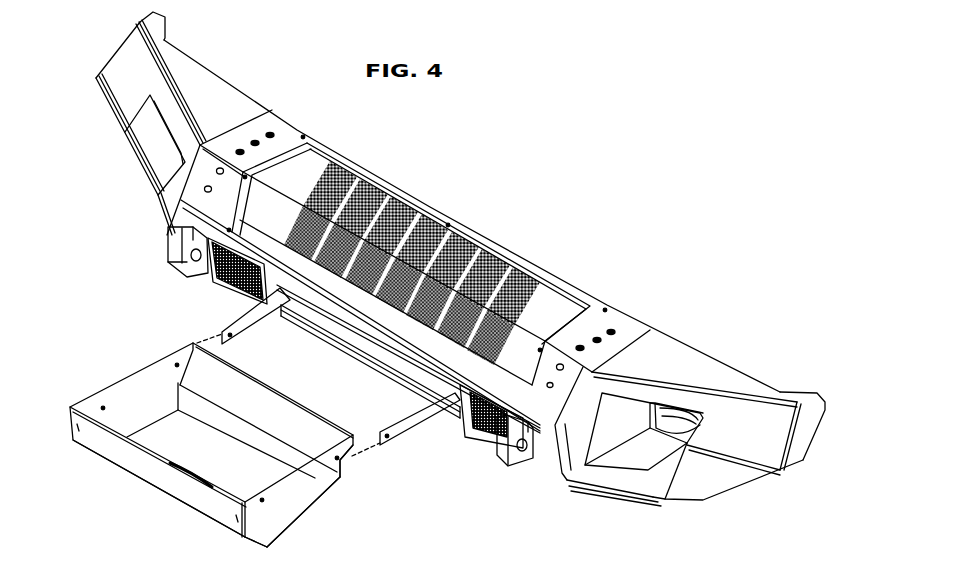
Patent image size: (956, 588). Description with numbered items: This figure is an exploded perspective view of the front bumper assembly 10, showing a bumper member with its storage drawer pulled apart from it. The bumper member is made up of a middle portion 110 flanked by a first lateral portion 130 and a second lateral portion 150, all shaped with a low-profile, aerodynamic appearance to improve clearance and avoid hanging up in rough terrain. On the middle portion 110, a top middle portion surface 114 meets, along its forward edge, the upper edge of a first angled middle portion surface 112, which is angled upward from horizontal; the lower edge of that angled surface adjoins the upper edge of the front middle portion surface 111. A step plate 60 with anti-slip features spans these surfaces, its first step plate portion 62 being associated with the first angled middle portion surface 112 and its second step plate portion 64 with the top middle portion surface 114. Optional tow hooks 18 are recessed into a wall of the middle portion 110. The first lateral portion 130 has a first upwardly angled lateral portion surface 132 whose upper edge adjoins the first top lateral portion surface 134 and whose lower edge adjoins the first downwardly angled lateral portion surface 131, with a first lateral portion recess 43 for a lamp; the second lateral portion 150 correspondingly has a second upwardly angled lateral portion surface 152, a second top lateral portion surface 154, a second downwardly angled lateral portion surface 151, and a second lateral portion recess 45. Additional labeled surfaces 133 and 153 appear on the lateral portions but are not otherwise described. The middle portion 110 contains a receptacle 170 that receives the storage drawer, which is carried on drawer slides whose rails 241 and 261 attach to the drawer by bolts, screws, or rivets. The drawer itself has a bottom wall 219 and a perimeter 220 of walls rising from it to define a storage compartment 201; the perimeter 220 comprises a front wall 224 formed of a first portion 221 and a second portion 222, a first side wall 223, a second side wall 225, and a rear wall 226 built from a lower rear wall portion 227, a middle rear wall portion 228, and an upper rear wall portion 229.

The bumper assembly 10 is at (587, 102).
The tow hooks 18 is at (178, 260).
The first lateral portion recess 43 is at (163, 163).
The second lateral portion recess 45 is at (638, 452).
The step plate 60 is at (334, 151).
The first step plate portion 62 is at (498, 380).
The second step plate portion 64 is at (556, 307).
The middle portion 110 is at (518, 228).
The front middle portion surface 111 is at (552, 460).
The first angled middle portion surface 112 is at (188, 198).
The top middle portion surface 114 is at (630, 327).
The first lateral portion 130 is at (83, 79).
The first downwardly angled lateral portion surface 131 is at (120, 133).
The first upwardly angled lateral portion surface 132 is at (122, 53).
The wall 133 is at (62, 587).
The first top lateral portion surface 134 is at (187, 67).
The second lateral portion 150 is at (798, 490).
The second downwardly angled lateral portion surface 151 is at (695, 488).
The second upwardly angled lateral portion surface 152 is at (753, 417).
The end face 153 is at (803, 440).
The second top lateral portion surface 154 is at (690, 360).
The receptacle 170 is at (376, 355).
The storage compartment 201 is at (138, 408).
The bottom wall 219 is at (243, 482).
The perimeter 220 is at (88, 468).
The first portion 221 is at (172, 487).
The second portion 222 is at (255, 543).
The first side wall 223 is at (130, 372).
The front wall 224 is at (132, 480).
The second side wall 225 is at (297, 510).
The rear wall 226 is at (260, 372).
The lower rear wall portion 227 is at (335, 470).
The middle rear wall portion 228 is at (195, 370).
The upper rear wall portion 229 is at (307, 415).
The rail 241 is at (240, 323).
The rail 261 is at (403, 427).